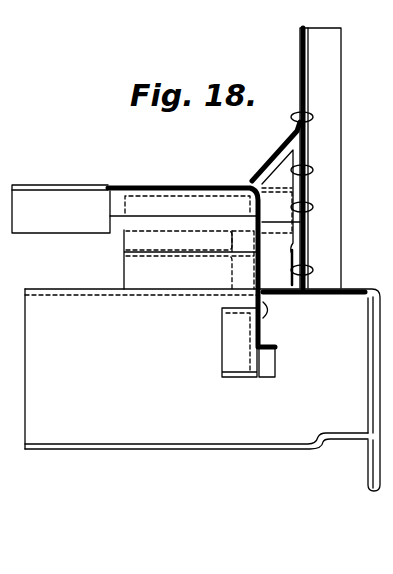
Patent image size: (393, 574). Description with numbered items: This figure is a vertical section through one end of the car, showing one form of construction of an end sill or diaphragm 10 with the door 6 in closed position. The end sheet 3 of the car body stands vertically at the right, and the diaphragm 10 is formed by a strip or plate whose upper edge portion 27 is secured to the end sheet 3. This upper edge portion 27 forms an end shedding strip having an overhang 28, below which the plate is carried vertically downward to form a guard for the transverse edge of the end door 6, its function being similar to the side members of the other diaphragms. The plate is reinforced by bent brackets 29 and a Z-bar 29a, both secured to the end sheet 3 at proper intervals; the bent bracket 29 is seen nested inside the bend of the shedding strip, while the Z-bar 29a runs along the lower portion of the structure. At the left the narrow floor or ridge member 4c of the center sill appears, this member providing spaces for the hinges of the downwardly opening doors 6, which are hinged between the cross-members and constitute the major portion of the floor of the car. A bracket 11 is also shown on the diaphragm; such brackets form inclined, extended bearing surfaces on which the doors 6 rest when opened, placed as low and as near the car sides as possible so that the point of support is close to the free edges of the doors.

The end sheet 3 is at (300, 63).
The upper edge portion 27 is at (275, 158).
The bent brackets 29 is at (278, 168).
The overhang 28 is at (250, 181).
The floor or ridge member 4c is at (61, 209).
The doors 6 is at (138, 207).
The brackets 11 is at (228, 318).
The end beam, sill or diaphragm 10 is at (262, 333).
The Z-bar 29a is at (280, 294).